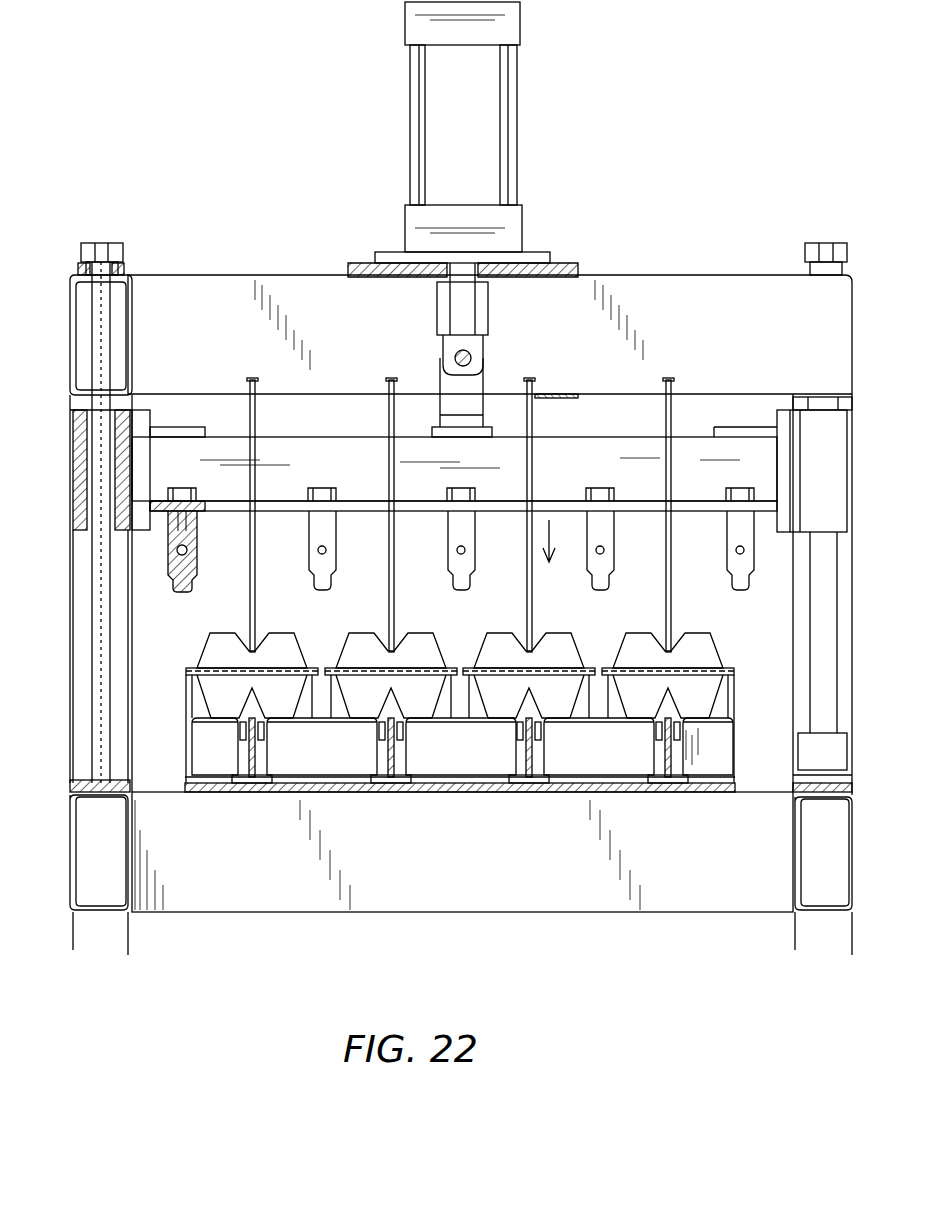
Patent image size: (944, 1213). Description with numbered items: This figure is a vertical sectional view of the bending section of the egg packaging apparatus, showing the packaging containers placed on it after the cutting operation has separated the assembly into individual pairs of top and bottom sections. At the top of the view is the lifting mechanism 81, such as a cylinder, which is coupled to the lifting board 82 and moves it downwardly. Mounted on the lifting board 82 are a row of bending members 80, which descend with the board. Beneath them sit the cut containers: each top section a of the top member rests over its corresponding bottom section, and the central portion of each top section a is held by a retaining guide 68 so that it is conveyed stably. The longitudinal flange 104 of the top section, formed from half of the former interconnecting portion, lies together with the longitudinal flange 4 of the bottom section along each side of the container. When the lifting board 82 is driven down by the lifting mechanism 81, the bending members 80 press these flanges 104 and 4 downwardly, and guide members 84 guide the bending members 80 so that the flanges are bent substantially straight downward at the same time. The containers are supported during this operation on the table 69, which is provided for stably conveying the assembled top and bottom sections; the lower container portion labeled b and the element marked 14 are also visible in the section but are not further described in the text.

The lifting mechanism 81 is at (483, 144).
The lifting board 82 is at (592, 474).
The bending member 80 is at (195, 565).
The retaining guide 68 is at (257, 628).
The longitudinal flange 104 is at (187, 670).
The longitudinal flange 4 is at (190, 682).
The guide member 84 is at (275, 722).
The table 69 is at (614, 720).
The container 14 is at (678, 738).
The top section a is at (230, 633).
The lower mold half b is at (192, 712).